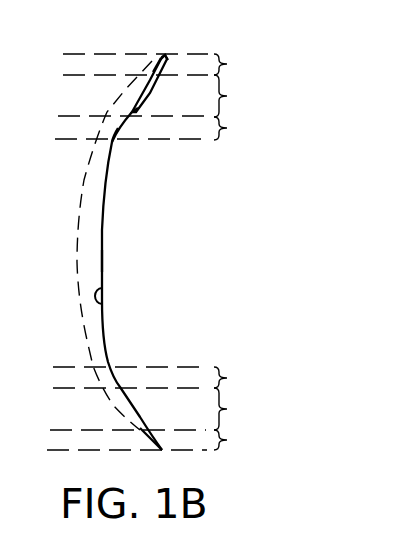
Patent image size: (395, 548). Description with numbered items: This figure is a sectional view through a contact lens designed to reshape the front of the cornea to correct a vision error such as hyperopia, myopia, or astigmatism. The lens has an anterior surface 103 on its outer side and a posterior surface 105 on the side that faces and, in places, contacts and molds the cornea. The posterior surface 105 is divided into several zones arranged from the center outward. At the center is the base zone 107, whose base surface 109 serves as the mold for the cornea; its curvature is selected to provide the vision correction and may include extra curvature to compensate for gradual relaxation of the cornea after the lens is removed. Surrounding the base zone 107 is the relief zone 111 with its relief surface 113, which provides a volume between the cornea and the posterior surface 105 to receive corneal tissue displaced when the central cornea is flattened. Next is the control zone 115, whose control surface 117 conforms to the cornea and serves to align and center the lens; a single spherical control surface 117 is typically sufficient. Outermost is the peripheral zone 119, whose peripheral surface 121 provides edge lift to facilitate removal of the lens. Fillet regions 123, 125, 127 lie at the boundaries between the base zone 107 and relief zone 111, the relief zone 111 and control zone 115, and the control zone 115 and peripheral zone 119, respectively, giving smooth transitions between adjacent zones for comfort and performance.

The anterior surface 103 is at (78, 218).
The posterior surface 105 is at (103, 302).
The base zone 107 is at (214, 140).
The base surface 109 is at (103, 262).
The relief zone 111 is at (243, 253).
The relief surface 113 is at (118, 383).
The control zone 115 is at (243, 252).
The control surface 117 is at (149, 92).
The peripheral zone 119 is at (243, 253).
The peripheral surface 121 is at (168, 64).
The fillet region 123 is at (112, 138).
The fillet region 125 is at (131, 112).
The fillet region 127 is at (156, 70).